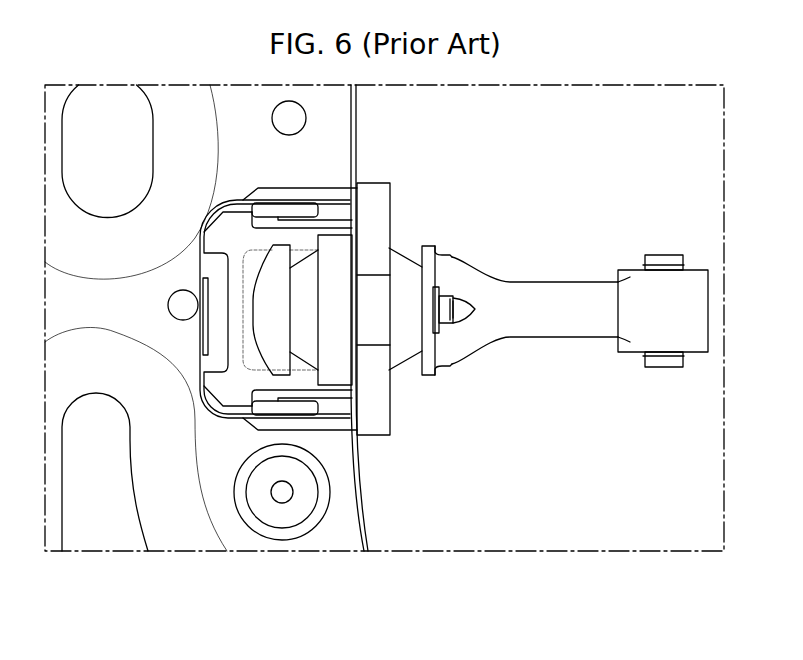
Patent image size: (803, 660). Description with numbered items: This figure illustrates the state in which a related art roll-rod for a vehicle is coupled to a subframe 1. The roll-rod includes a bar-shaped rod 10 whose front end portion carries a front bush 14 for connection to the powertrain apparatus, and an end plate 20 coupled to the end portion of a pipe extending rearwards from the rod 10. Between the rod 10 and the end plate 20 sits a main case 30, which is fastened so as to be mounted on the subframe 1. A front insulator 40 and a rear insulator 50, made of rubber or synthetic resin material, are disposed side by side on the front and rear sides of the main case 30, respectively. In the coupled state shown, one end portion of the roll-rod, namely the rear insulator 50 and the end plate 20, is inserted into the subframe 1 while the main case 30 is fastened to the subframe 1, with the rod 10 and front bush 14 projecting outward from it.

The subframe 1 is at (218, 482).
The rod 10 is at (563, 318).
The front bush 14 is at (662, 260).
The end plate 20 is at (280, 362).
The main case 30 is at (378, 205).
The front insulator 40 is at (402, 265).
The rear insulator 50 is at (307, 337).